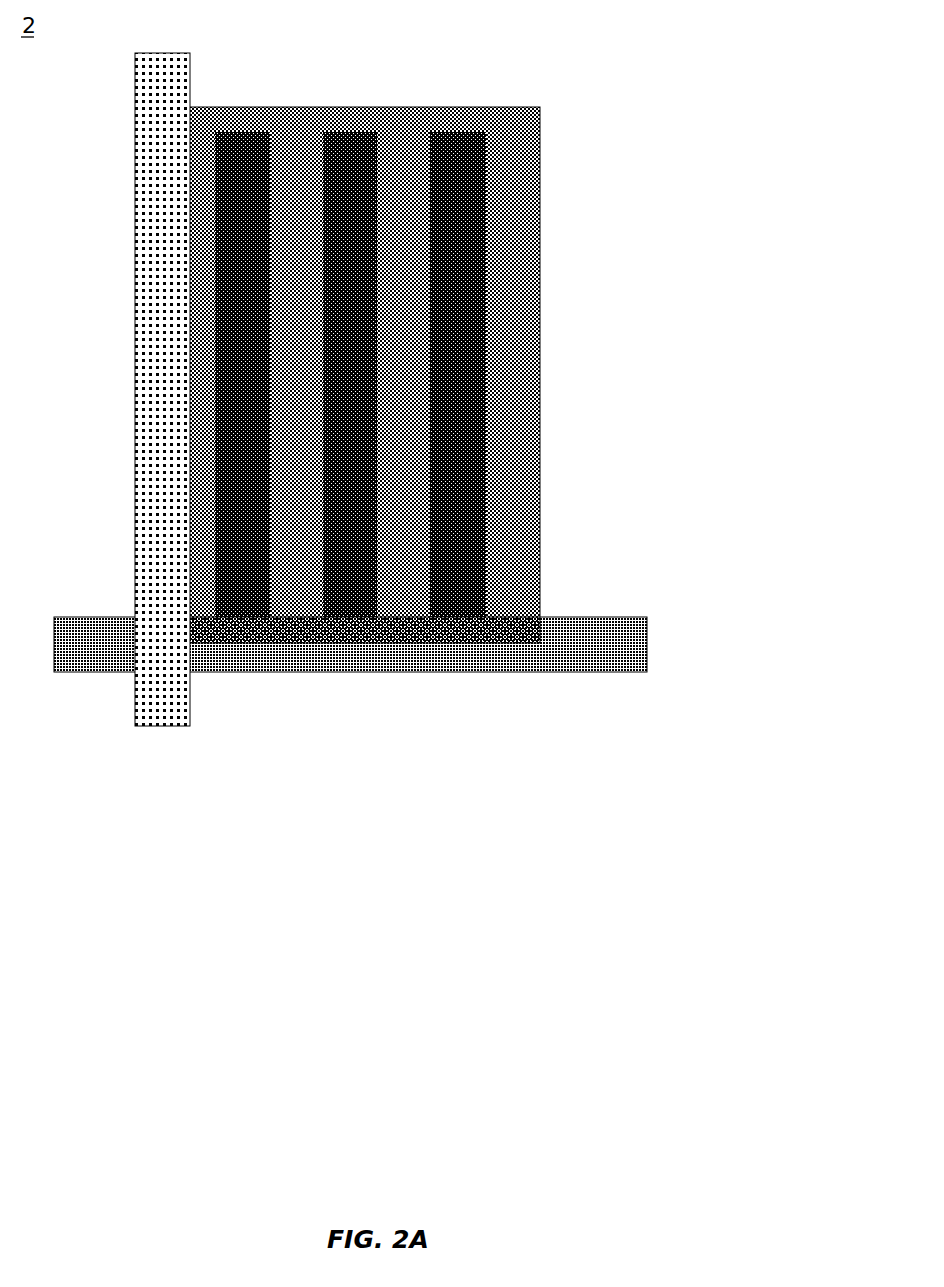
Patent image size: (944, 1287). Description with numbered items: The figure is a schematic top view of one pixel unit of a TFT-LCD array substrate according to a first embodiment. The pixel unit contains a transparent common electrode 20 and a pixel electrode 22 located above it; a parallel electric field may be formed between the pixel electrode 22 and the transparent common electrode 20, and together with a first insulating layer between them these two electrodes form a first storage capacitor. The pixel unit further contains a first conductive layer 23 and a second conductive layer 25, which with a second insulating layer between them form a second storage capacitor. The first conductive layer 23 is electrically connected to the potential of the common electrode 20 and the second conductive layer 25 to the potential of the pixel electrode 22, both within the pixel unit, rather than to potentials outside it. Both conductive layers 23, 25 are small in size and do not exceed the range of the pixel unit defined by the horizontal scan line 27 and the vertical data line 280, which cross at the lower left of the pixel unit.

The transparent common electrode 20 is at (525, 177).
The pixel electrode 22 is at (490, 277).
The first conductive layer 23 is at (290, 578).
The second conductive layer 25 is at (200, 543).
The scan line 27 is at (618, 655).
The vertical conductive line 280 is at (163, 698).